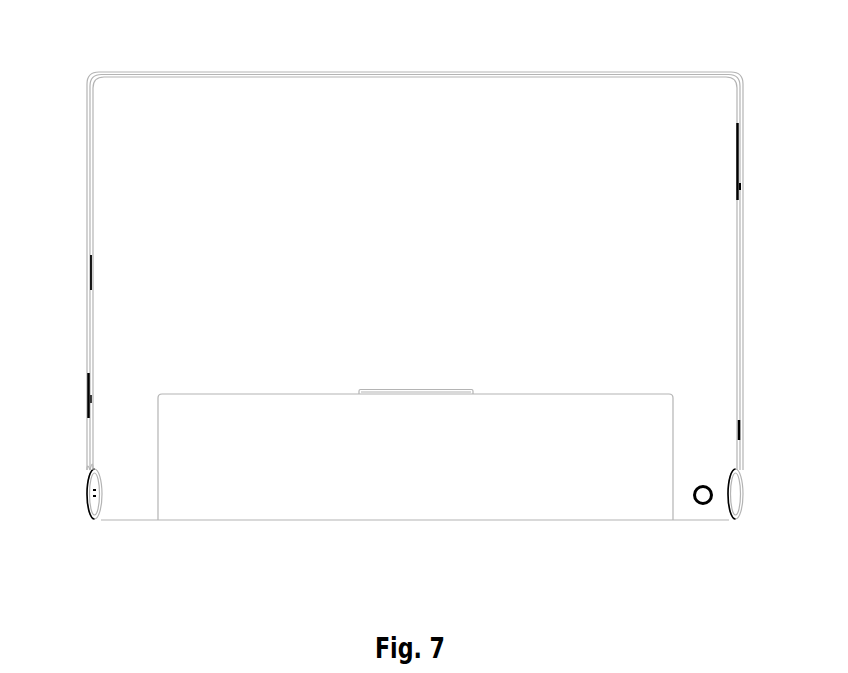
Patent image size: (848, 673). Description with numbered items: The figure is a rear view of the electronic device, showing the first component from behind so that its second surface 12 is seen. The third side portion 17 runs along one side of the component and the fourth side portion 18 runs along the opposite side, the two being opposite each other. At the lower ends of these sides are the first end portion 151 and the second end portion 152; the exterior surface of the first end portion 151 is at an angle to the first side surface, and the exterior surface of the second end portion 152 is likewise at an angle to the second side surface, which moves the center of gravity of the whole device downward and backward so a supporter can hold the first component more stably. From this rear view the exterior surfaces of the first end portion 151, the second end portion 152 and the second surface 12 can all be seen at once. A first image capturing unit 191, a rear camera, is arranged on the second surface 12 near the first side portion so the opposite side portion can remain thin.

The second surface 12 is at (542, 98).
The third side portion 17 is at (714, 270).
The fourth side portion 18 is at (118, 270).
The first end portion 151 is at (736, 482).
The second end portion 152 is at (90, 478).
The first image capturing unit 191 is at (698, 506).